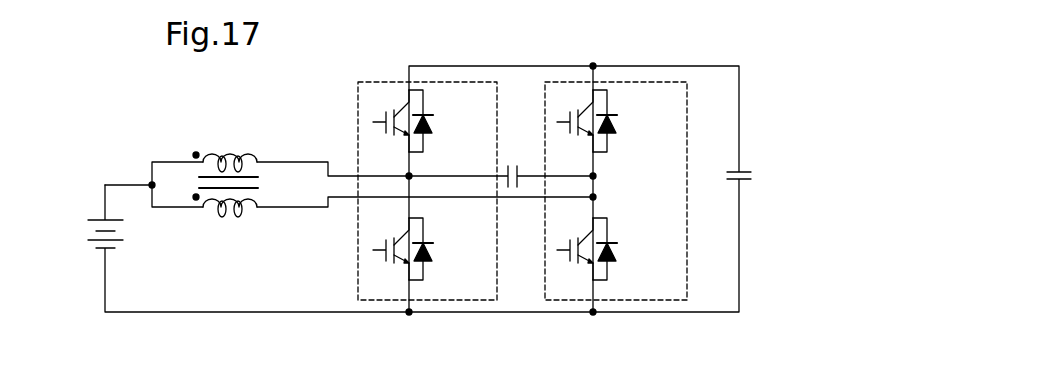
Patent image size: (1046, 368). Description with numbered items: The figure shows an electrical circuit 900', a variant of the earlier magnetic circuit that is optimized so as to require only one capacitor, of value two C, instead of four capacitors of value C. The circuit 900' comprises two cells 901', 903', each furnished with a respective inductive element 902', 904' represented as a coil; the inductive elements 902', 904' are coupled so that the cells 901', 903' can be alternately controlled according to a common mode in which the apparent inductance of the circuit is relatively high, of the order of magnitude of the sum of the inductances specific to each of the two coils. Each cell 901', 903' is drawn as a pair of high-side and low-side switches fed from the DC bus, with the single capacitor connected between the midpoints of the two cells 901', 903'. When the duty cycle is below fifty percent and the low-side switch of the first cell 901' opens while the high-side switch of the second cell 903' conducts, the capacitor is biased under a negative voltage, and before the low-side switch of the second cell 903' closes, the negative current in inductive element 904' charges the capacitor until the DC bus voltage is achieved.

The electrical circuit 900' is at (394, 202).
The cell 901' is at (452, 223).
The inductive element 902' is at (398, 136).
The cell 903' is at (635, 224).
The inductive element 904' is at (398, 235).